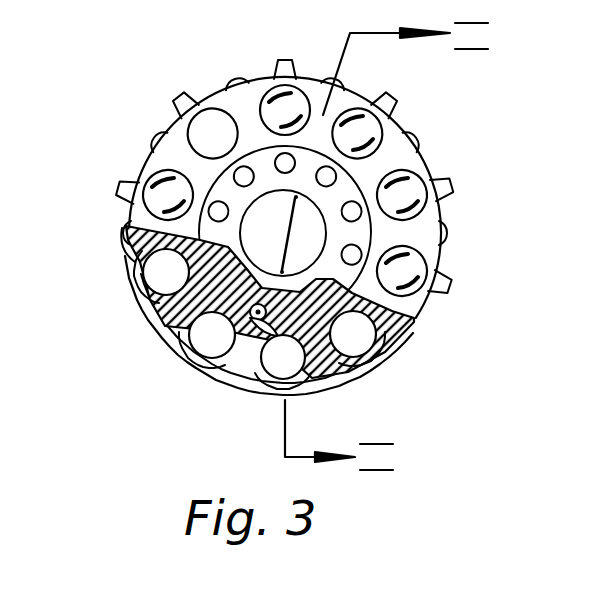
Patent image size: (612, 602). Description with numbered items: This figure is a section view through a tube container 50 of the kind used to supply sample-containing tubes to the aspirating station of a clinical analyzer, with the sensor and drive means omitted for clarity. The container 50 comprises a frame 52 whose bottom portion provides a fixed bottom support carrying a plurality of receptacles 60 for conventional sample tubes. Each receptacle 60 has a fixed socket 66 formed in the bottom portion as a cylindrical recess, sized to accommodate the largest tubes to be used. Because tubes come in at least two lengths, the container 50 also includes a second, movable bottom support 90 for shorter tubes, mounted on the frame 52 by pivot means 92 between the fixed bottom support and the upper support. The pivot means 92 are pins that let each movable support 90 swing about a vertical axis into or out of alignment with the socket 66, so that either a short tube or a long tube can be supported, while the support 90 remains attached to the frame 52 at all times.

The tube container 50 is at (147, 51).
The receptacle 60 is at (112, 236).
The socket 66 is at (197, 344).
The pivot means 92 is at (196, 352).
The frame 52 is at (216, 381).
The movable bottom support 90 is at (278, 387).